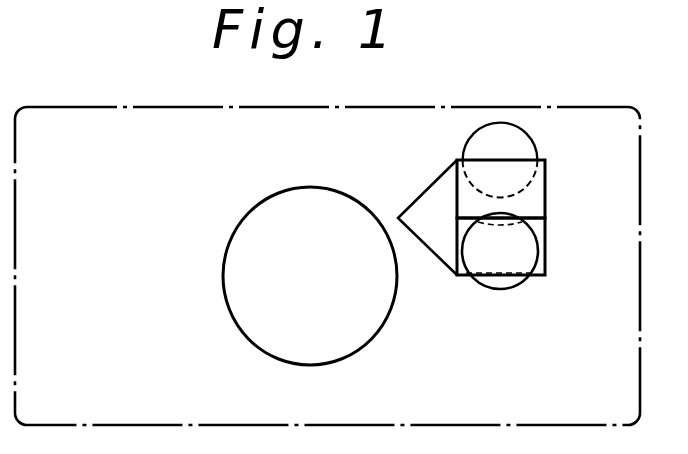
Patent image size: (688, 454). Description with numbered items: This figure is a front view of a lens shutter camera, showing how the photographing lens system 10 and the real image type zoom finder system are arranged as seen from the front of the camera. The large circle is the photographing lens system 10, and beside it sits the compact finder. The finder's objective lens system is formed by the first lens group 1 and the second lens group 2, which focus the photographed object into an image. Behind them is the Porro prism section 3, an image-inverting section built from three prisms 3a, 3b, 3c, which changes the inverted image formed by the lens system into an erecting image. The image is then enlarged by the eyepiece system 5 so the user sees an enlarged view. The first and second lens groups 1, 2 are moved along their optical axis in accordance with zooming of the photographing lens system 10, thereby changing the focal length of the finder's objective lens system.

The first lens group 1 is at (507, 279).
The second lens group 2 is at (513, 280).
The Porro prism section 3 is at (499, 230).
The prism 3a is at (545, 265).
The prism 3b is at (545, 170).
The prism 3c is at (425, 194).
The eyepiece system 5 is at (505, 147).
The photographing lens system 10 is at (363, 330).